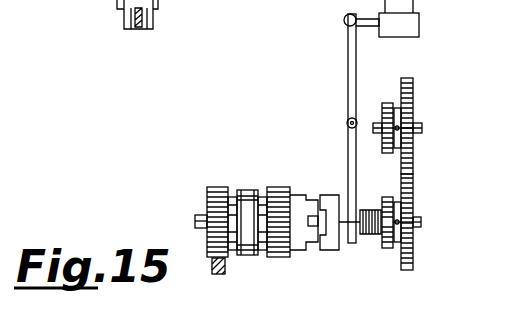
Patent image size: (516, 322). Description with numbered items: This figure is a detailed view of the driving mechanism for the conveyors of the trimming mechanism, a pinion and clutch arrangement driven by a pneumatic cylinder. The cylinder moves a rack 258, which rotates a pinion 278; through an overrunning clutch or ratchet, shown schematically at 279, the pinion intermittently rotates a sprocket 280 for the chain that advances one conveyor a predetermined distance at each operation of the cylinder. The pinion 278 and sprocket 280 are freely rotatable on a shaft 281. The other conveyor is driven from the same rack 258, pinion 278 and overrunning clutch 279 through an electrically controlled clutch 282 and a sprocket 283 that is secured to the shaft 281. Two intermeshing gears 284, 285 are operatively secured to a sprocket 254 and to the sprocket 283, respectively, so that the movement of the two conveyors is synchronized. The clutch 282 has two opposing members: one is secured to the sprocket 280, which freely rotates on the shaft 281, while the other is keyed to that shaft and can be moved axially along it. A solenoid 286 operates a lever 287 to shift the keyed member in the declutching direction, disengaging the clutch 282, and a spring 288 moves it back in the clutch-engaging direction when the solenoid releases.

The sprocket 254 is at (386, 103).
The rack 258 is at (223, 274).
The pinion 278 is at (215, 187).
The overrunning clutch 279 is at (262, 175).
The sprocket 280 is at (283, 257).
The shaft 281 is at (200, 216).
The electrically controlled clutch 282 is at (318, 182).
The sprocket 283 is at (388, 248).
The gear 284 is at (410, 104).
The gear 285 is at (410, 205).
The solenoid 286 is at (419, 24).
The lever 287 is at (350, 38).
The spring 288 is at (375, 236).